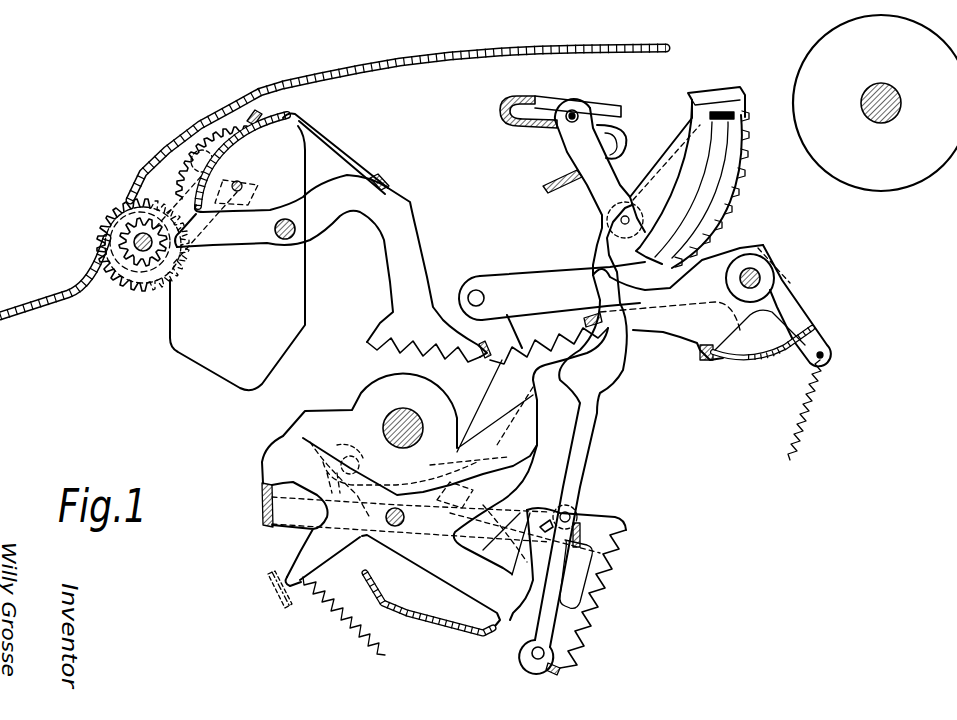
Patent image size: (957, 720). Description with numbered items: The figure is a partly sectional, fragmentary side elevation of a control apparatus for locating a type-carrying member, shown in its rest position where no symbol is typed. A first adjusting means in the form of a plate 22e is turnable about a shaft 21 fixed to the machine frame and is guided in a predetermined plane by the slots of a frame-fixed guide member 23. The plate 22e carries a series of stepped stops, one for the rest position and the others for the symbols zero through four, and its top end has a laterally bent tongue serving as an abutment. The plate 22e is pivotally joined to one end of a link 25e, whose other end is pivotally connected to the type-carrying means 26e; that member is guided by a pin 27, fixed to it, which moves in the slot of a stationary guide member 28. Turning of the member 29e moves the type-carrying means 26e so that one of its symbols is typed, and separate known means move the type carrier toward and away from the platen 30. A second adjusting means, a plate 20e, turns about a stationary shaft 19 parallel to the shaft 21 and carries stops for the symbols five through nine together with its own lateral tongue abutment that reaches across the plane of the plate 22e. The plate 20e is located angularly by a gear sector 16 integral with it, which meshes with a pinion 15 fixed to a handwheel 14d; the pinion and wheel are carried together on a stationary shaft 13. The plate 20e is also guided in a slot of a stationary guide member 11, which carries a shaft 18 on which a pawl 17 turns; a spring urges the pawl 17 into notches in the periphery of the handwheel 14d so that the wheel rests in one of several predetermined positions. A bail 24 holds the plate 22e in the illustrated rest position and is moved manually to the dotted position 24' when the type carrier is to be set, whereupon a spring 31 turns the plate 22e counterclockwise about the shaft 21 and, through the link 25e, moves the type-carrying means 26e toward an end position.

The stationary guide member 11 is at (194, 352).
The stationary shaft 13 is at (148, 234).
The handwheel 14d is at (125, 278).
The pinion 15 is at (125, 232).
The gear sector 16 is at (185, 174).
The pawl 17 is at (283, 119).
The shaft 18 is at (239, 183).
The stationary shaft 19 is at (285, 240).
The plate (second adjusting means) 20e is at (413, 253).
The shaft 21 is at (395, 528).
The plate (first adjusting means) 22e is at (529, 459).
The guide member 23 is at (427, 613).
The bail 24 is at (299, 534).
The dotted line position of bail 24' is at (267, 591).
The link 25e is at (577, 487).
The type-carrying means 26e is at (693, 118).
The pin 27 is at (573, 110).
The stationary guide member 28 is at (530, 97).
The member 29e is at (712, 158).
The platen 30 is at (877, 180).
The spring 31 is at (340, 618).